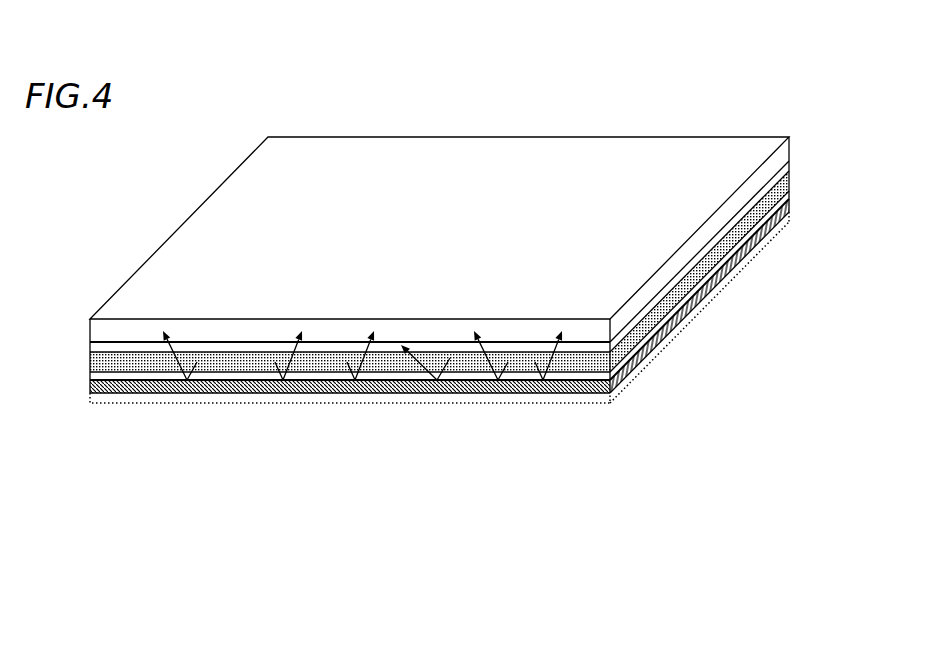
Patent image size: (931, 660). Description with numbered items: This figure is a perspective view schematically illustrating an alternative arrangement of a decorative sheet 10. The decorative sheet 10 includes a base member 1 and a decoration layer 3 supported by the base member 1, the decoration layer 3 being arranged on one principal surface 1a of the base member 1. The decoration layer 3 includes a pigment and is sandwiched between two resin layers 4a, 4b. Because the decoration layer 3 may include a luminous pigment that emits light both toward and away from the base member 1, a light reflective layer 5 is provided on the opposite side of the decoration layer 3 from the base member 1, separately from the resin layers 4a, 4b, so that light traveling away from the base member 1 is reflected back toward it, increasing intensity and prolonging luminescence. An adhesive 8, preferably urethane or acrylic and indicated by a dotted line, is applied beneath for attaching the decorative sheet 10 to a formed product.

The decorative sheet 10 is at (652, 98).
The base member 1 is at (88, 329).
The principal surface of the base member 1a is at (222, 343).
The resin layer 4a is at (88, 347).
The decoration layer 3 is at (88, 361).
The resin layer 4b is at (88, 380).
The light reflective layer 5 is at (88, 388).
The adhesive 8 is at (88, 401).